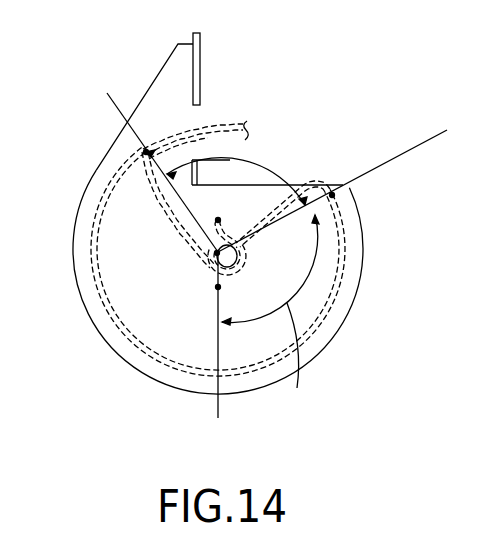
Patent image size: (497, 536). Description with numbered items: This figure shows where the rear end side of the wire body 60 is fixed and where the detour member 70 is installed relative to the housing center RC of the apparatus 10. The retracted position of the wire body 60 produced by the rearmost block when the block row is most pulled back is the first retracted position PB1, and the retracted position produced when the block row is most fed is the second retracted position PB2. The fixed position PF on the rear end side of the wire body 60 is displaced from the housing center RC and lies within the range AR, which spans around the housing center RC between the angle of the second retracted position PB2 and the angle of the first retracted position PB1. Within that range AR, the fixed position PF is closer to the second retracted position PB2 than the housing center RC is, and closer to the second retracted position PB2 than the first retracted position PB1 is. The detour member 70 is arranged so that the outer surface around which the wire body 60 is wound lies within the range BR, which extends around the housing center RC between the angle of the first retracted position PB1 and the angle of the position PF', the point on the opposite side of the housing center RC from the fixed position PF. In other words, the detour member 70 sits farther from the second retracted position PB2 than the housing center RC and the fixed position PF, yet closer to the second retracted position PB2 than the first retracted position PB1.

The reel body 10 is at (367, 297).
The wire body 60 is at (317, 331).
The detour member 70 is at (236, 260).
The first retracted position PB1 is at (333, 195).
The second retracted position PB2 is at (143, 152).
The fixed position PF is at (238, 217).
The position opposite the fixed position PF' is at (131, 323).
The housing center RC is at (216, 253).
The range AR is at (262, 166).
The range BR is at (320, 417).